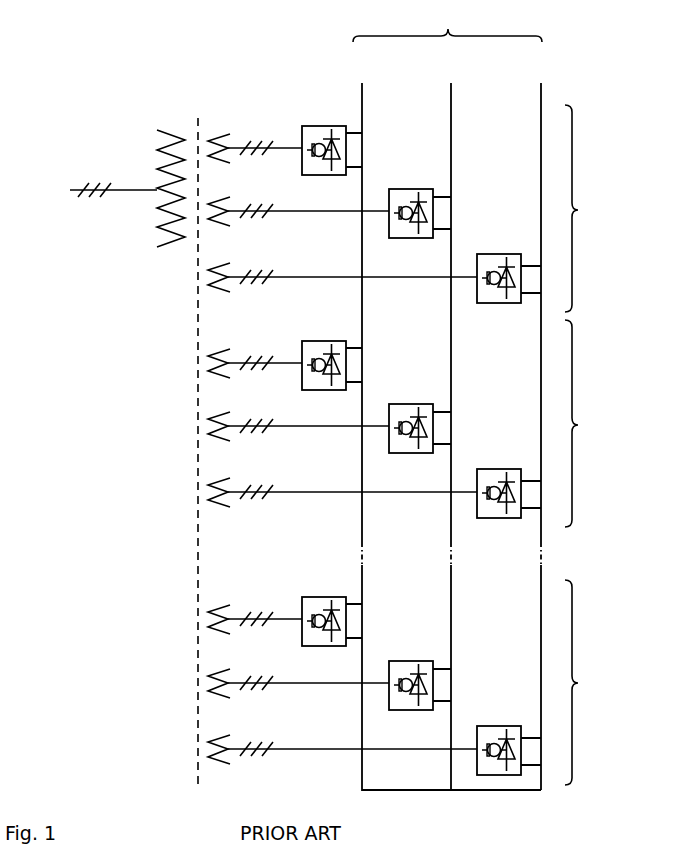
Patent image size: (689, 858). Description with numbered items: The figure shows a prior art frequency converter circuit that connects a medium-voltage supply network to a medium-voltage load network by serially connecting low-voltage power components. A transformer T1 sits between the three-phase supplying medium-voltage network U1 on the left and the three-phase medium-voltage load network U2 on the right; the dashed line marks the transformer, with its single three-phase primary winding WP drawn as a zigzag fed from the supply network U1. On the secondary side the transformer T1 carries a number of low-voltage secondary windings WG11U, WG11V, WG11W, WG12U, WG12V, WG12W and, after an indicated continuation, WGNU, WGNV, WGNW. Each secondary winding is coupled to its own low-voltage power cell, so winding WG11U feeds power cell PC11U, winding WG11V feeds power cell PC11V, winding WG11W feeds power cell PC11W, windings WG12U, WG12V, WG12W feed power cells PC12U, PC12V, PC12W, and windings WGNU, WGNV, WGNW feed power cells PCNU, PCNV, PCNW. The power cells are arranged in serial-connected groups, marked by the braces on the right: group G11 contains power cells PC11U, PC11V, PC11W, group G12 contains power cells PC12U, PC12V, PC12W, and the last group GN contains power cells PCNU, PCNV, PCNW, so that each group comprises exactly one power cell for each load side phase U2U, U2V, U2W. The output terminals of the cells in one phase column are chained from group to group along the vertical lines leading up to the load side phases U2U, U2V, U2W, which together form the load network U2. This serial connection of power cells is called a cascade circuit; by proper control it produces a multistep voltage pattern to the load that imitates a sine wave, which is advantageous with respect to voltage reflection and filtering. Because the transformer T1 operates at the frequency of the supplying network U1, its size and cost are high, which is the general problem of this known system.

The supplying medium-voltage network U1 is at (96, 191).
The primary winding WP is at (165, 173).
The transformer T1 is at (192, 435).
The medium-voltage load network U2 is at (447, 21).
The load side phase U U2U is at (448, 422).
The load side phase V U2V is at (443, 422).
The load side phase W U2W is at (533, 422).
The low-voltage secondary winding WG11U is at (255, 139).
The low-voltage secondary winding WG11V is at (298, 202).
The low-voltage secondary winding WG11W is at (342, 268).
The low-voltage secondary winding WG12U is at (255, 354).
The low-voltage secondary winding WG12V is at (298, 417).
The low-voltage secondary winding WG12W is at (342, 483).
The low-voltage secondary winding WGNU is at (255, 610).
The low-voltage secondary winding WGNV is at (298, 674).
The low-voltage secondary winding WGNW is at (342, 740).
The low-voltage power cell PC11U is at (328, 138).
The low-voltage power cell PC11V is at (418, 201).
The low-voltage power cell PC11W is at (507, 266).
The low-voltage power cell PC12U is at (328, 353).
The low-voltage power cell PC12V is at (418, 416).
The low-voltage power cell PC12W is at (507, 481).
The low-voltage power cell PCNU is at (328, 609).
The low-voltage power cell PCNV is at (418, 673).
The low-voltage power cell PCNW is at (507, 738).
The power cell group G11 is at (589, 208).
The power cell group G12 is at (589, 423).
The power cell group GN is at (586, 682).